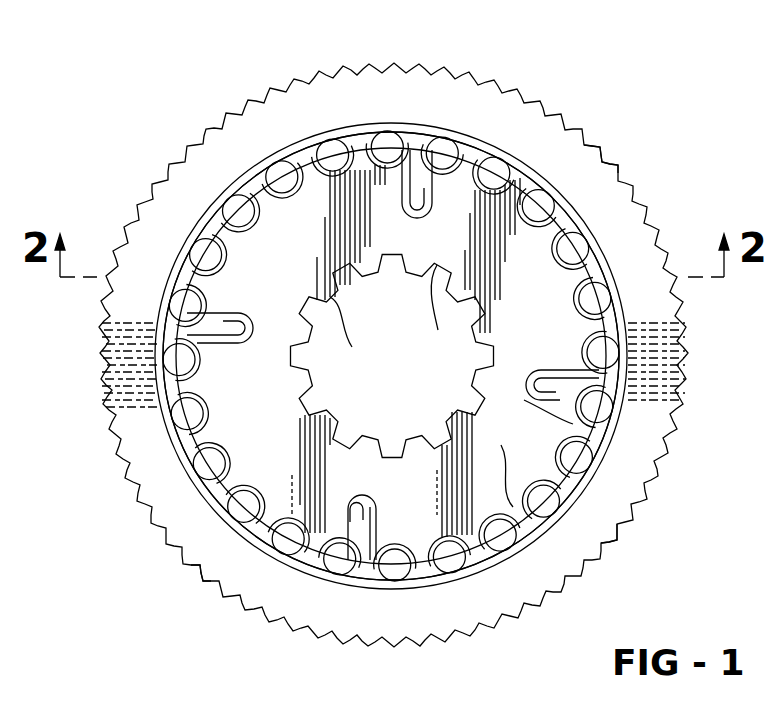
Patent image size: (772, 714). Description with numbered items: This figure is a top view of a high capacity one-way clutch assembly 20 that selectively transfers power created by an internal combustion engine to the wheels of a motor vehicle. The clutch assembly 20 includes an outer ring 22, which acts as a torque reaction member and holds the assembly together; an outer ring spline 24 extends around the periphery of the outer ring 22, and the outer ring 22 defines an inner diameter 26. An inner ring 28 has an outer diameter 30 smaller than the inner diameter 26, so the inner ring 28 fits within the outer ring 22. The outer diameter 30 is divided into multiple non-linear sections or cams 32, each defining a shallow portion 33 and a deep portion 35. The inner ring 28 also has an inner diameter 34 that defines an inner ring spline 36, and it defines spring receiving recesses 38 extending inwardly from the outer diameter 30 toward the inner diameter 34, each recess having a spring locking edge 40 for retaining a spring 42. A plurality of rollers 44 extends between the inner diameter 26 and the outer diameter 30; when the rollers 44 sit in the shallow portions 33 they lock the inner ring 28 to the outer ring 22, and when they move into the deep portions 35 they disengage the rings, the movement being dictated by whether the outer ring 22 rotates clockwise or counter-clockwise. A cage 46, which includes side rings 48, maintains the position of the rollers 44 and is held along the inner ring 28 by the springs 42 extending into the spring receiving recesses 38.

The clutch assembly 20 is at (203, 599).
The outer ring 22 is at (240, 107).
The outer ring spline 24 is at (594, 153).
The inner diameter 26 is at (347, 130).
The inner ring 28 is at (221, 250).
The outer diameter 30 is at (553, 232).
The cams 32 is at (573, 280).
The shallow portion 33 is at (523, 450).
The inner diameter 34 is at (475, 302).
The deep portion 35 is at (619, 539).
The inner ring spline 36 is at (335, 407).
The spring receiving recesses 38 is at (412, 158).
The spring locking edge 40 is at (432, 180).
The spring 42 is at (408, 196).
The rollers 44 is at (200, 480).
The cage 46 is at (197, 552).
The side rings 48 is at (524, 181).